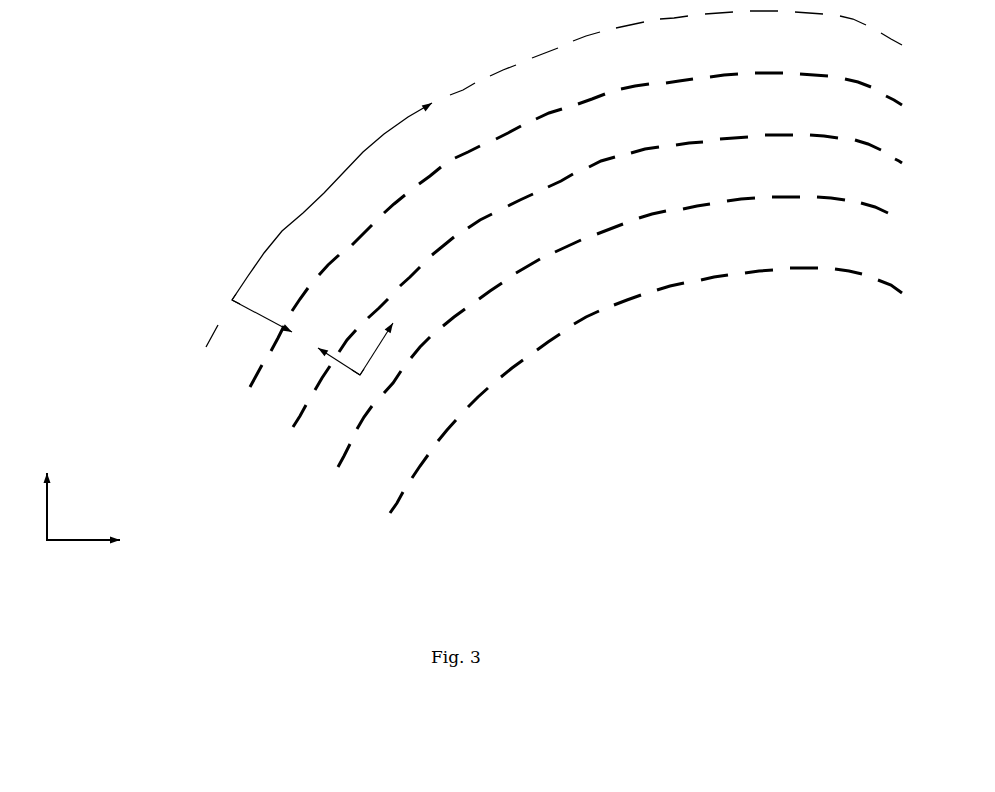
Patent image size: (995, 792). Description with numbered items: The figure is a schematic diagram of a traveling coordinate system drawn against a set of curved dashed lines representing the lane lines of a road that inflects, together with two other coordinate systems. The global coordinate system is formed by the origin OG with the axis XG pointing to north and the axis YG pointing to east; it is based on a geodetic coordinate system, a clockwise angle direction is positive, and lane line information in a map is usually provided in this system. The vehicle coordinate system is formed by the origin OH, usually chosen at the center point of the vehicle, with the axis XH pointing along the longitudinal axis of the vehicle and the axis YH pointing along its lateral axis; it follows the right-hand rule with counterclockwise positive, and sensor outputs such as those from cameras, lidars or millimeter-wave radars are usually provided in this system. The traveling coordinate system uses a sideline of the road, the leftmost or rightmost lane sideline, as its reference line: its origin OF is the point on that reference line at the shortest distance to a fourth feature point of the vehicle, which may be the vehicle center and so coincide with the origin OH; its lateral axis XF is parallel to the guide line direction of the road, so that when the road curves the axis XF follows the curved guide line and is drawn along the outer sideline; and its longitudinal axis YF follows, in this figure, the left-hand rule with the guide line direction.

The lateral axis of the traveling coordinate system XF is at (332, 189).
The longitudinal axis of the traveling coordinate system YF is at (262, 326).
The coordinate origin of the traveling coordinate system OF is at (215, 285).
The longitudinal axis of the vehicle coordinate system XH is at (390, 334).
The lateral axis of the vehicle coordinate system YH is at (335, 345).
The coordinate origin of the vehicle coordinate system OH is at (356, 386).
The north axis of the global coordinate system XG is at (35, 487).
The east axis of the global coordinate system YG is at (102, 551).
The coordinate origin of the global coordinate system OG is at (42, 550).